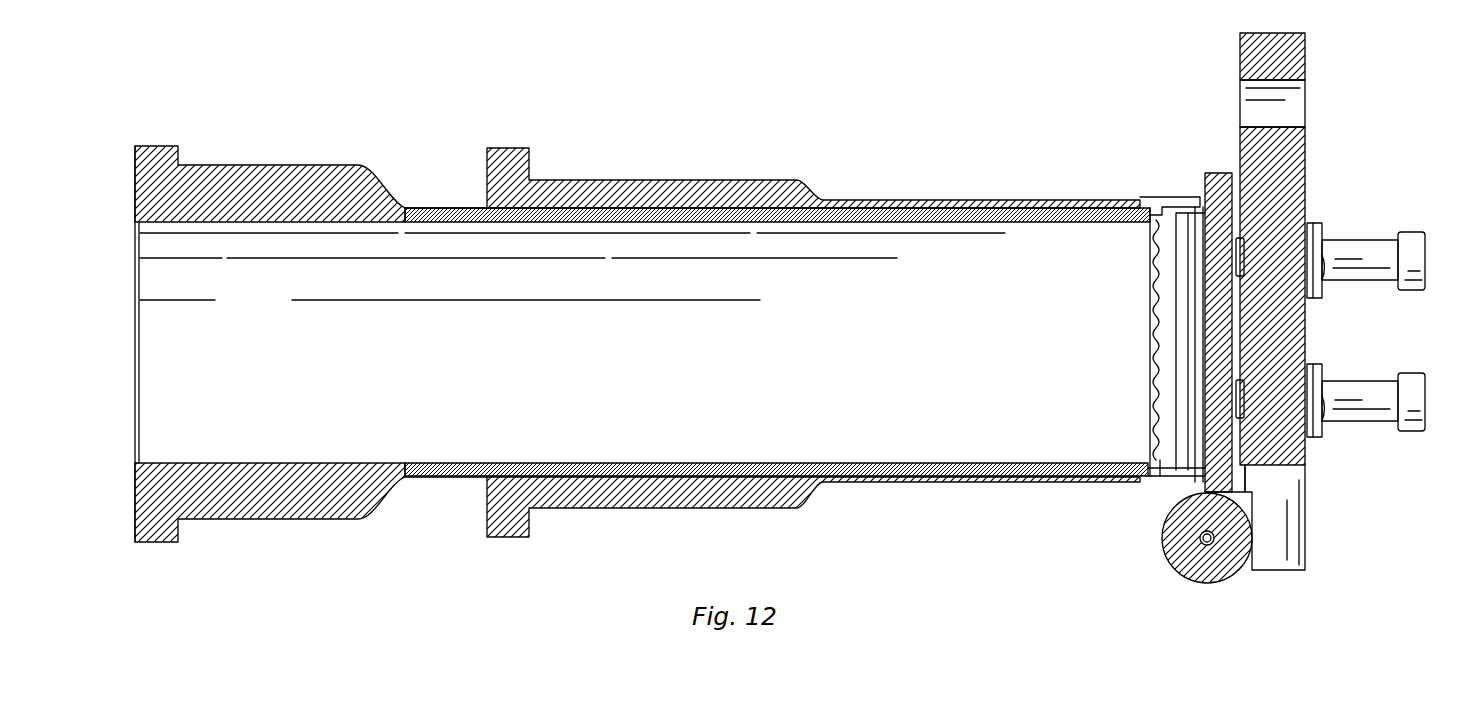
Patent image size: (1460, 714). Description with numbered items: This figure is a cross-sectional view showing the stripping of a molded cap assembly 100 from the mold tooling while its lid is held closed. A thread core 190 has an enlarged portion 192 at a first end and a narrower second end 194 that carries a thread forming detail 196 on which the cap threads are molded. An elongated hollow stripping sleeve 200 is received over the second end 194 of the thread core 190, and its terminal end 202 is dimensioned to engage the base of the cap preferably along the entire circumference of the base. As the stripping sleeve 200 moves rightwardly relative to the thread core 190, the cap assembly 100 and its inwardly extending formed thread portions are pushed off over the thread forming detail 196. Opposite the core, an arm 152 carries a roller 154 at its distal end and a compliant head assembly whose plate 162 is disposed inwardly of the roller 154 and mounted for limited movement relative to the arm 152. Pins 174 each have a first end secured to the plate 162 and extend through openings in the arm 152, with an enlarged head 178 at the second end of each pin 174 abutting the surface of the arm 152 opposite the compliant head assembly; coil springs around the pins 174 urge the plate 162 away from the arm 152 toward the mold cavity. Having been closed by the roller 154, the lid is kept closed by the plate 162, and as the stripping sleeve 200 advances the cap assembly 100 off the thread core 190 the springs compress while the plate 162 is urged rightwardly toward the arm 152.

The cap assembly 100 is at (1148, 494).
The arm 152 is at (1290, 150).
The roller 154 is at (1180, 562).
The plate 162 is at (1210, 172).
The pin 174 is at (1368, 246).
The enlarged head 178 is at (1408, 283).
The thread core 190 is at (269, 150).
The enlarged portion 192 is at (258, 472).
The second end 194 is at (540, 212).
The thread forming detail 196 is at (1110, 455).
The stripping sleeve 200 is at (760, 178).
The terminal end 202 is at (1135, 196).